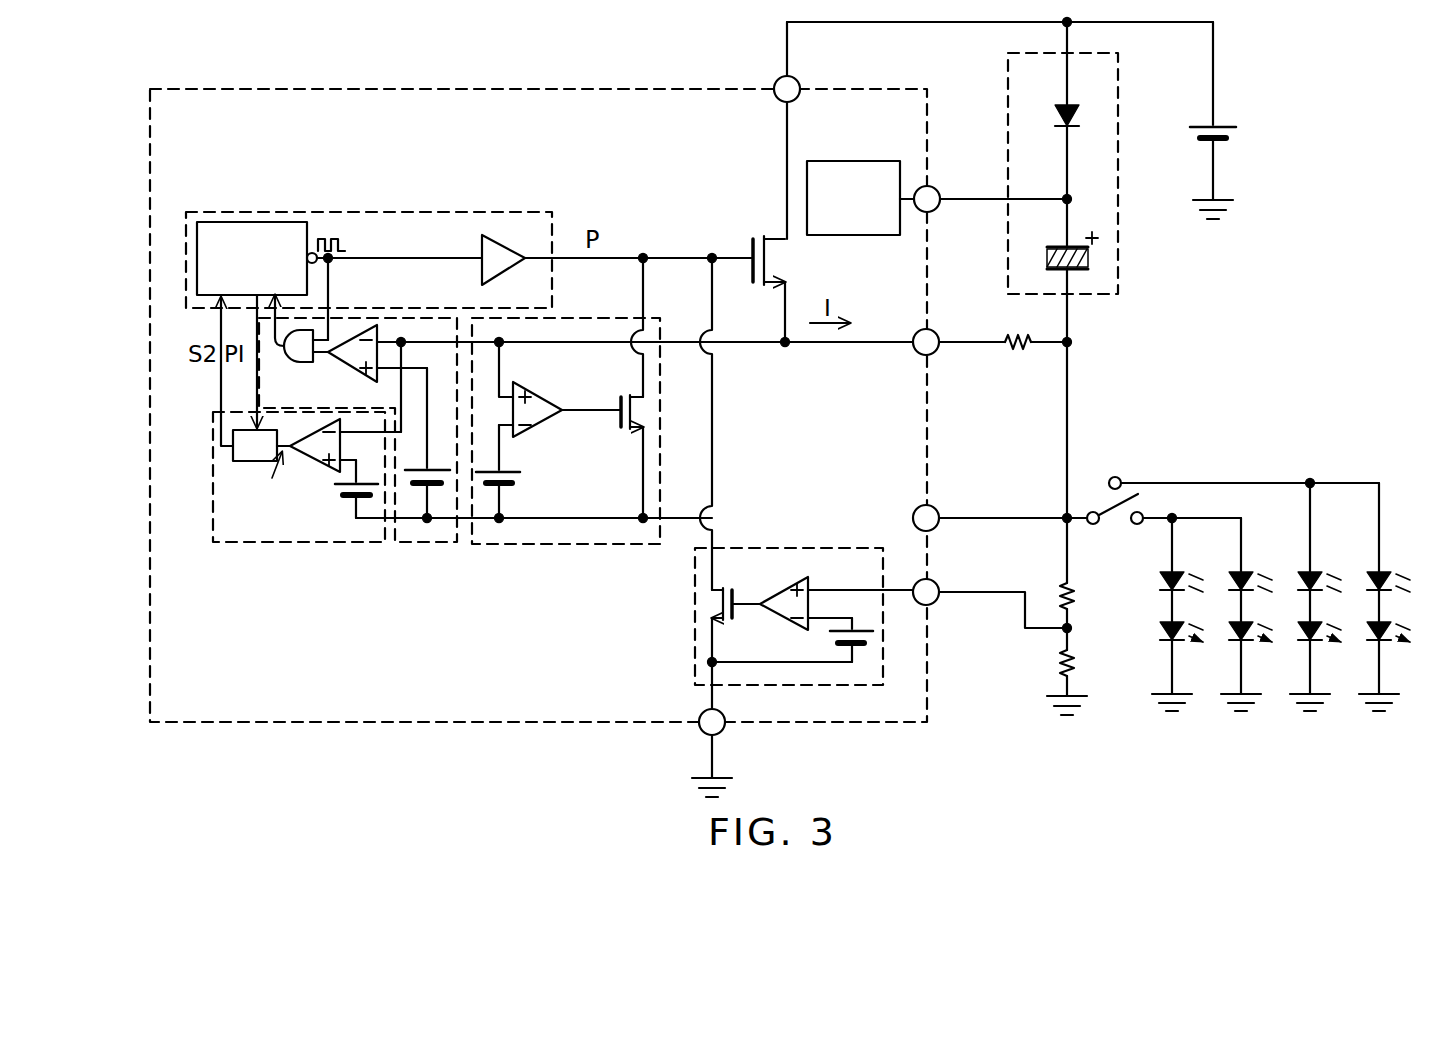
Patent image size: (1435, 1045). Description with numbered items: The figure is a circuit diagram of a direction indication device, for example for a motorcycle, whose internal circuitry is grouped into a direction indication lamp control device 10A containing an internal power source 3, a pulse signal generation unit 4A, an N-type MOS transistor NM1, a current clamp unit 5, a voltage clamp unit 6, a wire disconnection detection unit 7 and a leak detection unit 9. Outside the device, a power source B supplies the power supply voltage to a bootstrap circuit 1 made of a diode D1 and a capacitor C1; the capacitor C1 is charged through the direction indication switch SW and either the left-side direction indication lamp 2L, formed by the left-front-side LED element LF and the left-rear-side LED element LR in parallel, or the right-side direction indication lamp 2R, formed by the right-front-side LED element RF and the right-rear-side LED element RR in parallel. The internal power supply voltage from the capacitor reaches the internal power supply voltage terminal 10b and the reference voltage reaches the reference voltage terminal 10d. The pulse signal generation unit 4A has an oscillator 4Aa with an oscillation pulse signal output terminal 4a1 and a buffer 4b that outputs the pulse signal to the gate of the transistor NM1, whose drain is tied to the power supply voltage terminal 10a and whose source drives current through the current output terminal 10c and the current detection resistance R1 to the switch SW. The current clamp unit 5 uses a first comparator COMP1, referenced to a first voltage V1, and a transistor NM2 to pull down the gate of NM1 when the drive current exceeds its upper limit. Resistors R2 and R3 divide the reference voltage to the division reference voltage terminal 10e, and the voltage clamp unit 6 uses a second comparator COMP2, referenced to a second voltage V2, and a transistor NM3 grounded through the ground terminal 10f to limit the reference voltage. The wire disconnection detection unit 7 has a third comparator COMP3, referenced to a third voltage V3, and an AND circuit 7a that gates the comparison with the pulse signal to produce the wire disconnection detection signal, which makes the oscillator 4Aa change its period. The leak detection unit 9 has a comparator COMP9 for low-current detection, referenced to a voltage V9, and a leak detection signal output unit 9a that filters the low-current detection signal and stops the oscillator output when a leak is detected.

The direction indication lamp control device 10A is at (567, 89).
The power supply voltage terminal 10a is at (796, 78).
The internal power supply voltage terminal 10b is at (937, 210).
The current output terminal 10c is at (937, 353).
The reference voltage terminal 10d is at (933, 506).
The division reference voltage terminal 10e is at (935, 582).
The ground terminal 10f is at (702, 732).
The bootstrap circuit 1 is at (1118, 265).
The internal power source 3 is at (855, 161).
The pulse signal generation unit 4A is at (384, 212).
The oscillator 4Aa is at (254, 222).
The oscillation pulse signal output terminal 4a1 is at (314, 253).
The buffer 4b is at (482, 243).
The current clamp unit 5 is at (540, 545).
The voltage clamp unit 6 is at (695, 615).
The wire disconnection detection unit 7 is at (425, 542).
The AND circuit 7a is at (279, 343).
The leak detection unit 9 is at (300, 542).
The leak detection signal output unit 9a is at (252, 462).
The left-side direction indication lamp 2L is at (1194, 643).
The right-side direction indication lamp 2R is at (1338, 626).
The N-type MOS transistor NM1 is at (767, 238).
The N-type MOS transistor NM2 is at (603, 395).
The N-type MOS transistor NM3 is at (740, 619).
The first comparator COMP1 is at (561, 421).
The second comparator COMP2 is at (795, 591).
The third comparator COMP3 is at (366, 369).
The comparator for low-current detection COMP9 is at (316, 473).
The first voltage V1 is at (515, 471).
The second voltage V2 is at (839, 640).
The third voltage V3 is at (424, 443).
The voltage corresponding to the leak detection current value V9 is at (343, 489).
The current detection resistance R1 is at (1003, 359).
The resistor R2 is at (1051, 598).
The resistor R3 is at (1050, 666).
The diode D1 is at (1051, 119).
The capacitor C1 is at (1054, 252).
The power source B is at (1224, 120).
The direction indication switch SW is at (1100, 489).
The left-front-side LED element LF is at (1160, 563).
The left-rear-side LED element LR is at (1226, 563).
The right-front-side LED element RF is at (1295, 563).
The right-rear-side LED element RR is at (1364, 563).